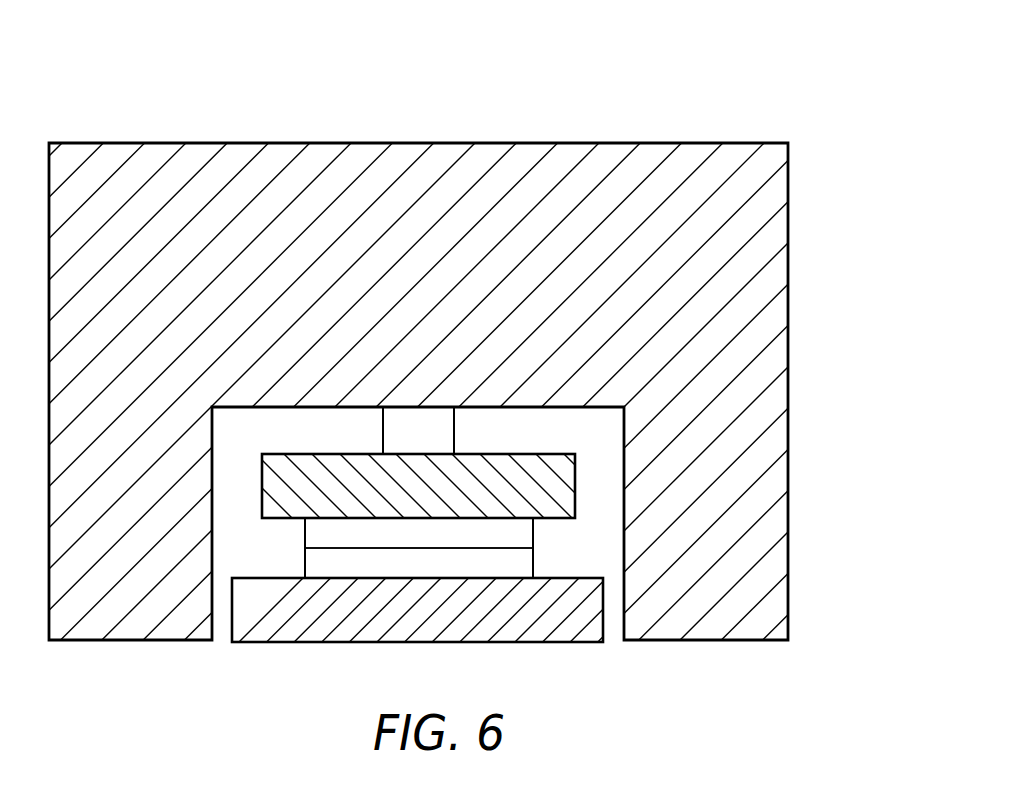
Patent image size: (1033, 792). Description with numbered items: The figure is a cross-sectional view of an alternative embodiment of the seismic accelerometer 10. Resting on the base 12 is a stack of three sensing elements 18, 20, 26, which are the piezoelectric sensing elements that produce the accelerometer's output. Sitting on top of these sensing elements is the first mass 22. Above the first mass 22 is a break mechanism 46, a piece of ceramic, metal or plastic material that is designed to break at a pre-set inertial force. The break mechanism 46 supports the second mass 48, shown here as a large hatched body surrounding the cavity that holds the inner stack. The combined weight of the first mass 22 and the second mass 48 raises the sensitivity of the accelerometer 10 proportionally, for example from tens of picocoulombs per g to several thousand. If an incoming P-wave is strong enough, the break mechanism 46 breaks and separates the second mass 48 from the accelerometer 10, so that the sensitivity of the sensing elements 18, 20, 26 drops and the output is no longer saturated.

The seismic accelerometer 10 is at (572, 78).
The base 12 is at (542, 642).
The first directional piezoelectric sensing element 18 is at (533, 537).
The second directional piezoelectric sensing element 20 is at (590, 543).
The third sensing element 26 is at (603, 556).
The first mass 22 is at (575, 487).
The break mechanism 46 is at (455, 432).
The second mass 48 is at (663, 143).